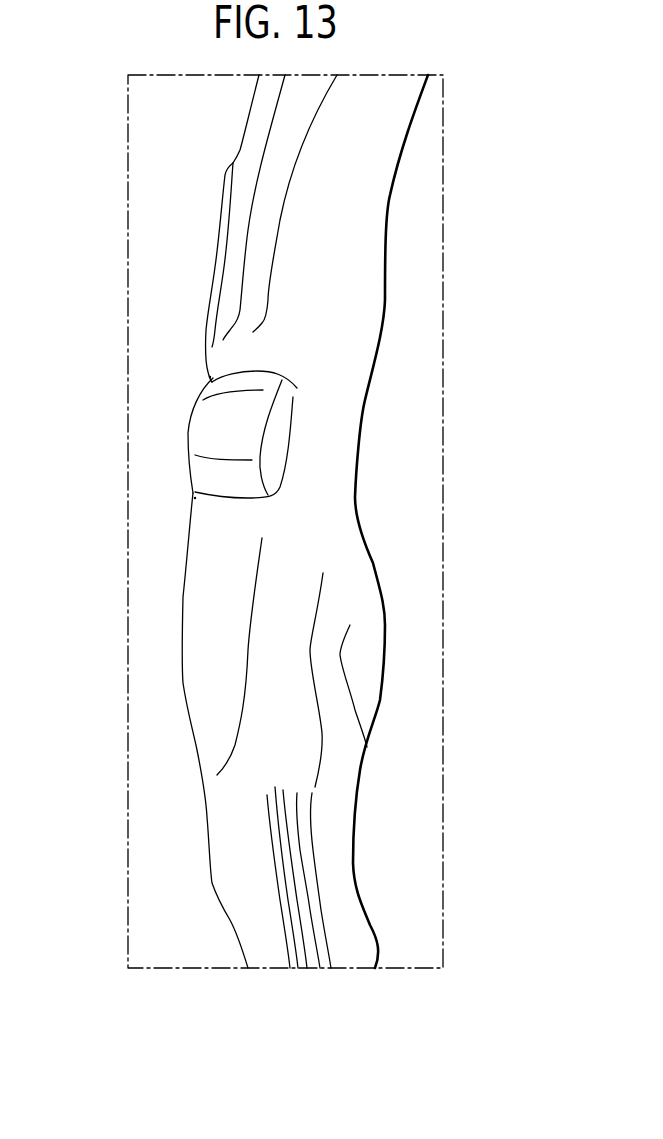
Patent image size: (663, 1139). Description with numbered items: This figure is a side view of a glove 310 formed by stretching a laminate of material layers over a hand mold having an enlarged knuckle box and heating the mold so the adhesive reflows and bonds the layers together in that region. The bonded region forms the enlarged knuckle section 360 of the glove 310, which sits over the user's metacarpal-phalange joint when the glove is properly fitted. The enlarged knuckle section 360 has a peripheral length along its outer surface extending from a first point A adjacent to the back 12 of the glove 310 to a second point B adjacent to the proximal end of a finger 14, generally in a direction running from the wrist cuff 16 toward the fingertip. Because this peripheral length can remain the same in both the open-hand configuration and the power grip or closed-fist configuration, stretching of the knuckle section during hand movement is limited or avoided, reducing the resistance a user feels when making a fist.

The back 12 is at (230, 662).
The finger 14 is at (217, 302).
The cuff 16 is at (207, 885).
The glove 310 is at (398, 217).
The enlarged knuckle section 360 is at (187, 427).
The first point A is at (195, 498).
The second point B is at (210, 377).